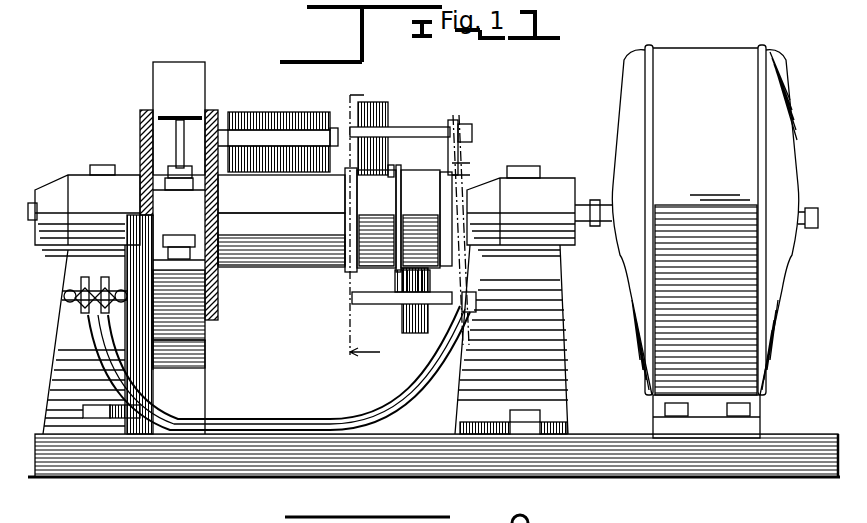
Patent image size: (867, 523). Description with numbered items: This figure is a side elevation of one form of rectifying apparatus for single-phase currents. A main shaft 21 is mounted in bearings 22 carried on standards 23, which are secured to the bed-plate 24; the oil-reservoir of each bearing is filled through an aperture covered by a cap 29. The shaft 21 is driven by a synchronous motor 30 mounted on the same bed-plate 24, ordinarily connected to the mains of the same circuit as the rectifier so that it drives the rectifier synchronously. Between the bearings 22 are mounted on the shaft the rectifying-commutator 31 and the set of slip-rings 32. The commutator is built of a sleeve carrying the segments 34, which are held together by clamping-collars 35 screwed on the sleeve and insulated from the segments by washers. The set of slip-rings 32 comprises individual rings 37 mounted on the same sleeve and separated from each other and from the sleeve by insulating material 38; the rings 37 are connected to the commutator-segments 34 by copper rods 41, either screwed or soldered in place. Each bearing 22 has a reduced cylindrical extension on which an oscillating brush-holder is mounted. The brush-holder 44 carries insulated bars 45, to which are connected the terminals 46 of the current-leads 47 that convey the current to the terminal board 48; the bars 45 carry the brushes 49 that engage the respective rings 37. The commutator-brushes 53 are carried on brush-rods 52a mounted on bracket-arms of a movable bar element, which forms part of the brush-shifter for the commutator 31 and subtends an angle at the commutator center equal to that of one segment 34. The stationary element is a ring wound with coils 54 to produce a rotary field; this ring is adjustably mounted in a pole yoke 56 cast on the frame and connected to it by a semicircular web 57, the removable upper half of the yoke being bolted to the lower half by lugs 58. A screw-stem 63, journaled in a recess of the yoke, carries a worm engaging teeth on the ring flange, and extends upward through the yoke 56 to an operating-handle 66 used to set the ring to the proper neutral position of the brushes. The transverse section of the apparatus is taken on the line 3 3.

The section line 3 3 is at (361, 226).
The main shaft 21 is at (600, 185).
The bearings 22 is at (48, 180).
The standards 23 is at (78, 267).
The bed-plate 24 is at (622, 460).
The cap 29 is at (100, 165).
The synchronous motor 30 is at (705, 241).
The rectifying-commutator 31 is at (272, 268).
The set of slip-rings 32 is at (445, 168).
The segments 34 is at (300, 289).
The clamping-collars 35 is at (345, 200).
The rings 37 is at (398, 219).
The insulating material 38 is at (455, 122).
The copper rods 41 is at (346, 180).
The brush-holder 44 is at (466, 255).
The insulated bars 45 is at (420, 127).
The terminals 46 is at (472, 130).
The current-leads 47 is at (413, 390).
The terminal board 48 is at (70, 305).
The brushes 49 is at (375, 104).
The brush-rods 52a is at (334, 128).
The commutator-brushes 53 is at (285, 112).
The coils 54 is at (143, 135).
The pole yoke 56 is at (184, 70).
The semicircular web 57 is at (205, 355).
The lugs 58 is at (165, 185).
The screw-stem 63 is at (176, 140).
The operating-handle 66 is at (172, 117).